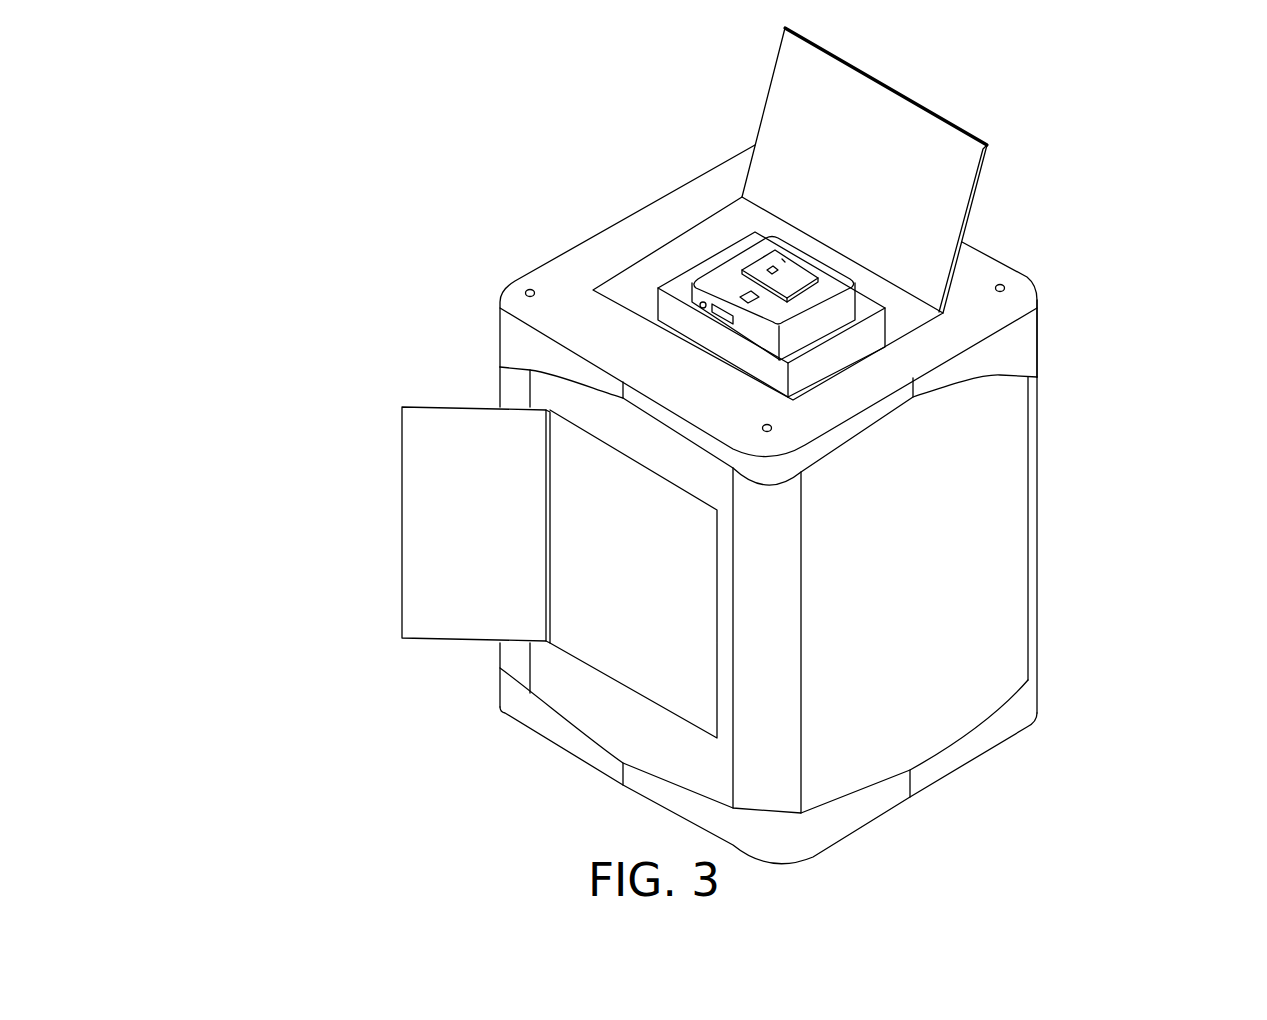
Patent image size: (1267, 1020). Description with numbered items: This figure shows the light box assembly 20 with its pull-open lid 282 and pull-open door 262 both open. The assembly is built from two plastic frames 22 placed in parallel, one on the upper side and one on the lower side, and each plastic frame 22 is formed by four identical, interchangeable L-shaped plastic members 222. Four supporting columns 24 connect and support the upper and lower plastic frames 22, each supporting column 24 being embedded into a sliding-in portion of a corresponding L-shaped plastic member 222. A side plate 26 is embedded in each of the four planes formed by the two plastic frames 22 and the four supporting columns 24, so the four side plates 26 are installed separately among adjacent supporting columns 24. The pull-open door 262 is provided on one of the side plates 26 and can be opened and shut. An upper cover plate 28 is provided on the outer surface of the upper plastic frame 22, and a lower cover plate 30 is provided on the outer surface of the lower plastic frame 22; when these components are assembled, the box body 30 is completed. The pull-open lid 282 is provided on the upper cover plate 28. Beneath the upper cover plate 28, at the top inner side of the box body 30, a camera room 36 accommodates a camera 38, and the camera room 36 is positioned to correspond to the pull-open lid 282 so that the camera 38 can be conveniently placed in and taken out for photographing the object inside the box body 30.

The light box assembly 20 is at (342, 723).
The plastic frame 22 is at (500, 332).
The L-shaped plastic member 222 is at (1010, 358).
The supporting column 24 is at (763, 772).
The side plate 26 is at (568, 703).
The pull-open door 262 is at (440, 500).
The upper cover plate 28 is at (668, 200).
The pull-open lid 282 is at (915, 172).
The lower cover plate / box body 30 is at (1025, 518).
The camera room 36 is at (668, 285).
The camera 38 is at (817, 310).